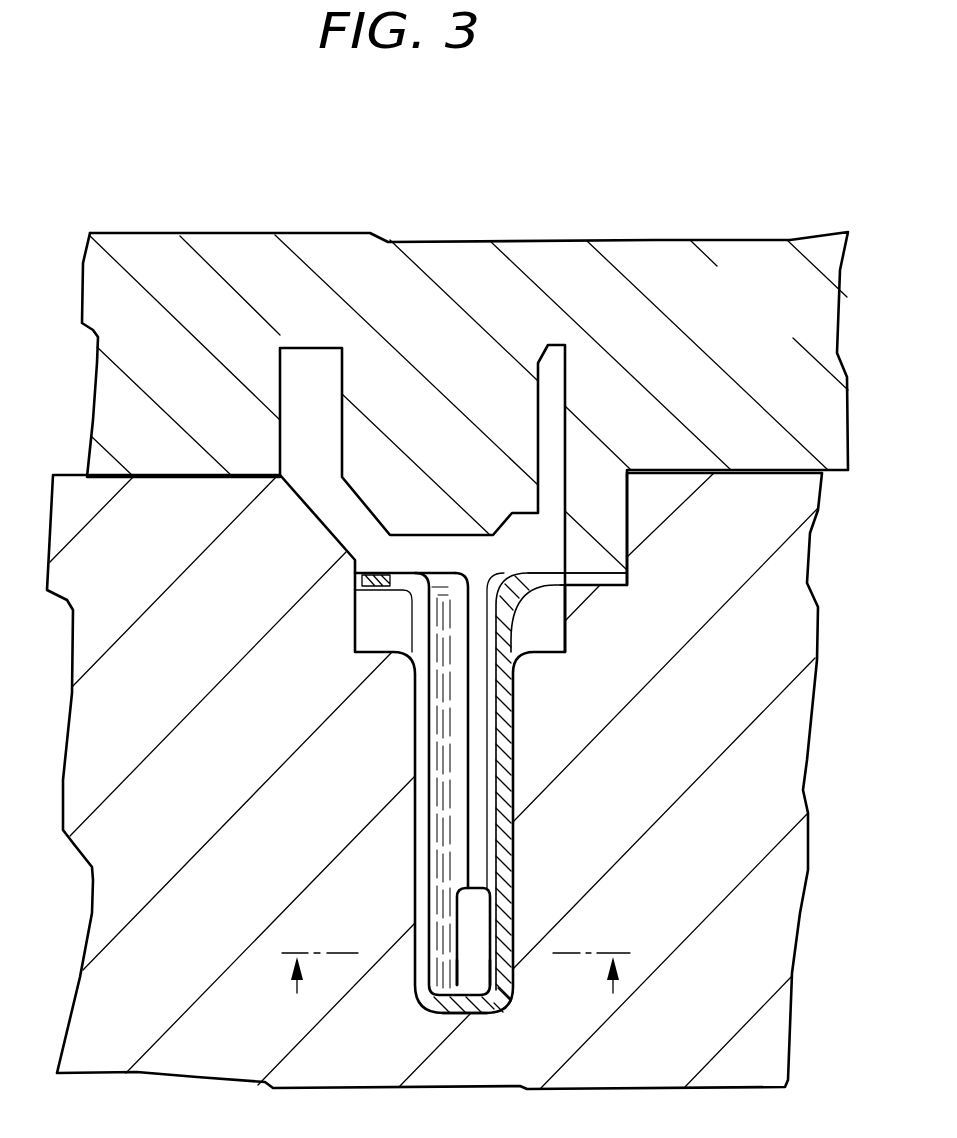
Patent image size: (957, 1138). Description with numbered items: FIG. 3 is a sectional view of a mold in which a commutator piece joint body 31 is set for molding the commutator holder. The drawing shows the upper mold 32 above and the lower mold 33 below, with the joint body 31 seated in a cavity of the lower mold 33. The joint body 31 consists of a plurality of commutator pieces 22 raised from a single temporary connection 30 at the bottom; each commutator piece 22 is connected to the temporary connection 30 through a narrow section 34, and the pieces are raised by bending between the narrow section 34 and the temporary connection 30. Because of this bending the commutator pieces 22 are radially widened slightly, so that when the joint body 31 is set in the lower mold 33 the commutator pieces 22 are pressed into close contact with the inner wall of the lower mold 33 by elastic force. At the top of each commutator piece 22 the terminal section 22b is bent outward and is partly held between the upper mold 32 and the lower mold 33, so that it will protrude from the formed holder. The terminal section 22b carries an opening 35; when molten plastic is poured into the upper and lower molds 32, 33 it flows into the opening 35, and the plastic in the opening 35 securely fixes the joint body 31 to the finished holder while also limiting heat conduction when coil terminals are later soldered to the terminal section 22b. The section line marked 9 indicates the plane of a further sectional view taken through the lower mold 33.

The section line 9- 9 is at (456, 955).
The commutator piece 22 is at (453, 807).
The terminal section 22b is at (627, 577).
The temporary connection 30 is at (478, 1013).
The commutator piece joint body 31 is at (553, 676).
The upper mold 32 is at (770, 321).
The lower mold 33 is at (770, 664).
The narrow section 34 is at (445, 966).
The opening 35 is at (549, 576).